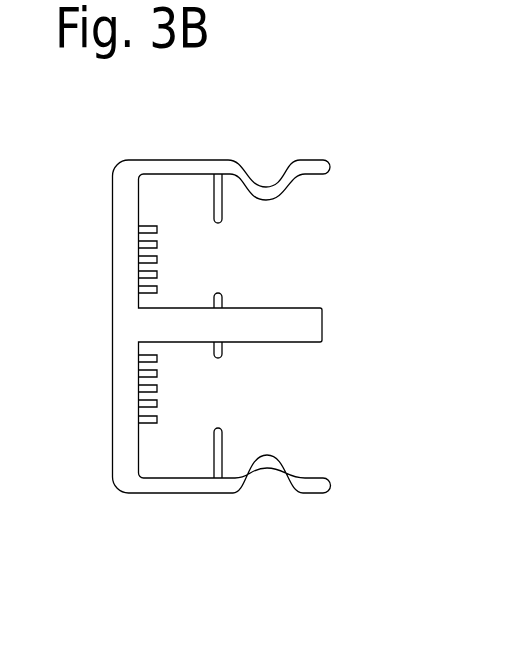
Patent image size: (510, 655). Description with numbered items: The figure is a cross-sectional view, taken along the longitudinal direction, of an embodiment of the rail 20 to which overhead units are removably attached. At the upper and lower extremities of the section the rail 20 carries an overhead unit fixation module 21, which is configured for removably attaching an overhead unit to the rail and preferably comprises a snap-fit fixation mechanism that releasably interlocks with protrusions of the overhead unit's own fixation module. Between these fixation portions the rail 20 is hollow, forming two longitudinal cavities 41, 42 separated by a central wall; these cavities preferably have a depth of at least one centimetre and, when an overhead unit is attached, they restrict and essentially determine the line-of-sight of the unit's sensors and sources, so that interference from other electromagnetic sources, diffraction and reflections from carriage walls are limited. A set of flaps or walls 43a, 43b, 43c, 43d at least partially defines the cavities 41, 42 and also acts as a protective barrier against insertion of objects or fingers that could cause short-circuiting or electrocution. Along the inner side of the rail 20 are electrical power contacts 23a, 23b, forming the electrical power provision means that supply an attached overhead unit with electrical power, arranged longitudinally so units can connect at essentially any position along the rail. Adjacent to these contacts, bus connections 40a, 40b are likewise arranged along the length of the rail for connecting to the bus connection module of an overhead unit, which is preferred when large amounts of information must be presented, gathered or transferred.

The rail 20 is at (180, 503).
The overhead unit fixation module 21 is at (265, 170).
The electrical power contact 23a is at (150, 228).
The electrical power contact 23b is at (150, 424).
The bus connection 40a is at (167, 240).
The bus connection 40b is at (167, 355).
The longitudinal cavity 41 is at (251, 258).
The longitudinal cavity 42 is at (251, 393).
The flap or wall 43a is at (218, 217).
The flap or wall 43b is at (220, 301).
The flap or wall 43c is at (220, 350).
The flap or wall 43d is at (222, 446).